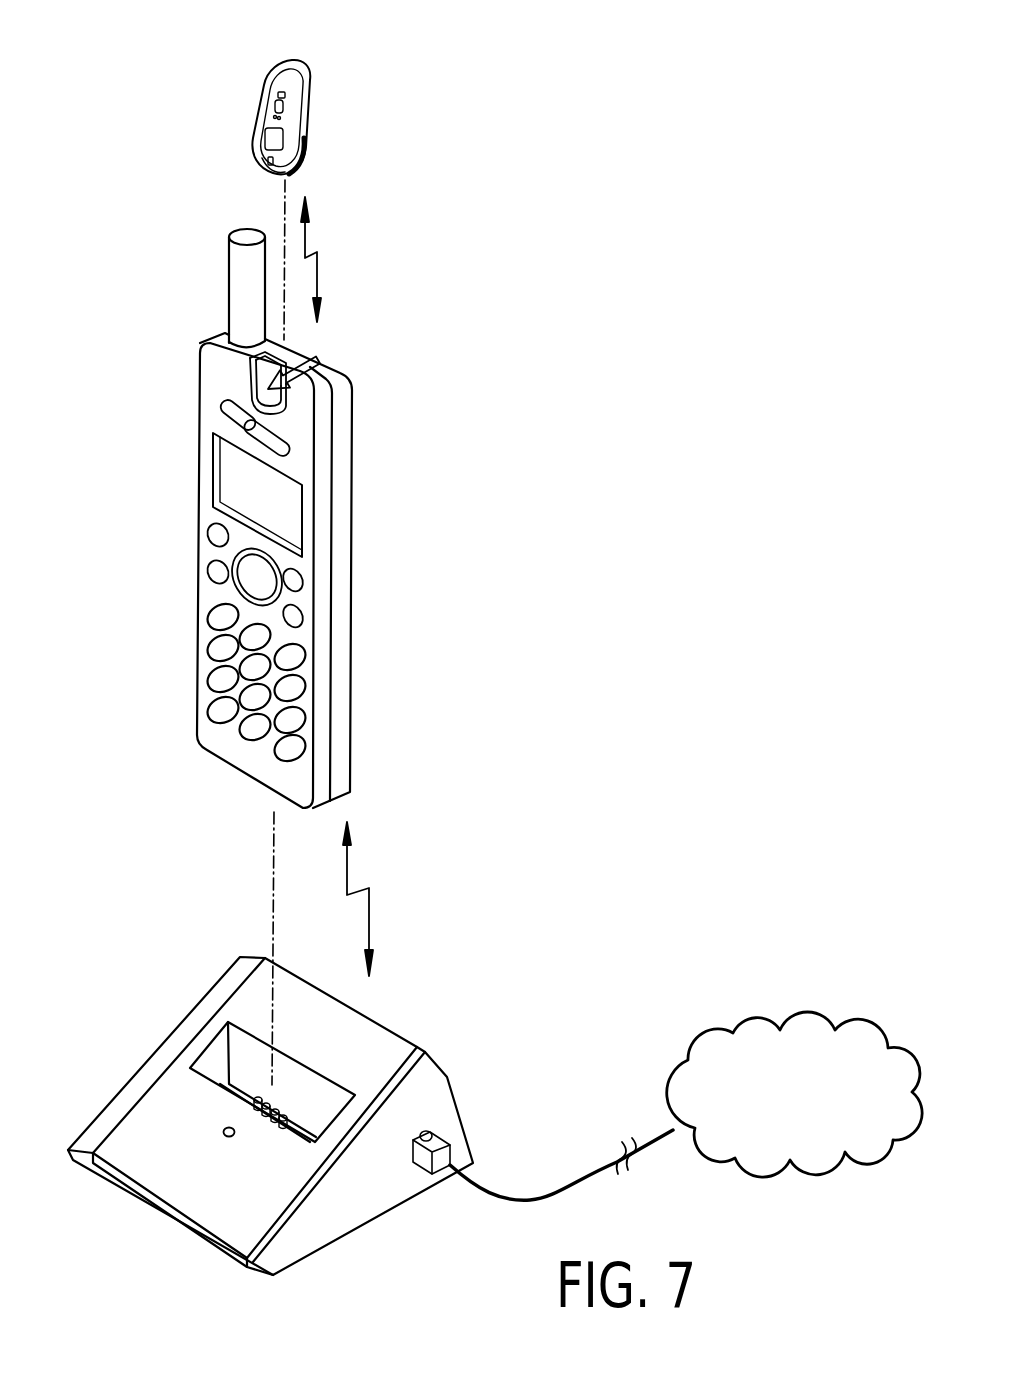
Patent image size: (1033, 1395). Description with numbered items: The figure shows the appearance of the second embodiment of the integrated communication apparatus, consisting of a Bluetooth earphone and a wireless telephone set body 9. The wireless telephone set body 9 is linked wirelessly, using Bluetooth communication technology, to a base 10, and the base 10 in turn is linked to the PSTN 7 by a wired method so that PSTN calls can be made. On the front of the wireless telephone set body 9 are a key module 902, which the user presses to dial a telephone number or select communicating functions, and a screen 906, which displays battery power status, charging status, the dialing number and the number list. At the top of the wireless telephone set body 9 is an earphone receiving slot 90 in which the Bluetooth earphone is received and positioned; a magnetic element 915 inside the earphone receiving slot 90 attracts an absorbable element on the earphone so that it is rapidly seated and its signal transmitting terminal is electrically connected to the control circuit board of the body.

The earphone receiving slot 90 is at (272, 387).
The magnetic element 915 is at (287, 362).
The wireless telephone set body 9 is at (345, 512).
The screen 906 is at (243, 480).
The key module 902 is at (212, 676).
The base 10 is at (145, 1077).
The PSTN 7 is at (809, 1026).